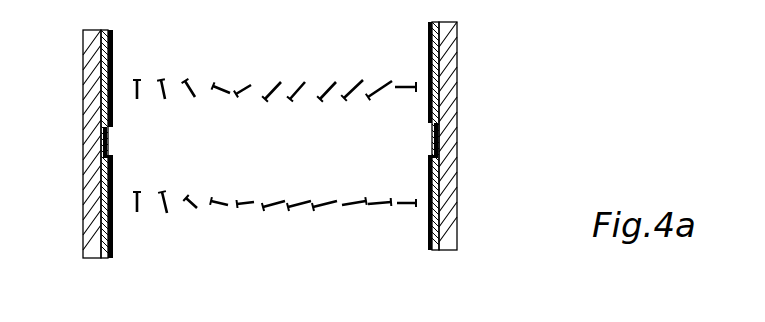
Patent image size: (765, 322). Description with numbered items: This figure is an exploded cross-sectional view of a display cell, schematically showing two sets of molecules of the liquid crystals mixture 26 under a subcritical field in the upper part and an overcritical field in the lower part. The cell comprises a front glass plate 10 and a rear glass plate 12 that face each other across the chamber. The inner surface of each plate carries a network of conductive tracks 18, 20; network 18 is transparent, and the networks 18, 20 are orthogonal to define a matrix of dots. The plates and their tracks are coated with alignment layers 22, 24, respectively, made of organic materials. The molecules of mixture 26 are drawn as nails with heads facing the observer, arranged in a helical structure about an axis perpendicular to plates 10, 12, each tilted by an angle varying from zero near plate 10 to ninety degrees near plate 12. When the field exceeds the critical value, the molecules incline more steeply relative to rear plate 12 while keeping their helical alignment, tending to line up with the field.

The front glass plate 10 is at (447, 165).
The rear glass plate 12 is at (95, 173).
The network of conductive tracks 18 is at (437, 250).
The network of conductive tracks 20 is at (105, 258).
The alignment layer 22 is at (433, 250).
The alignment layer 24 is at (112, 258).
The liquid crystals mixture 26 is at (230, 97).